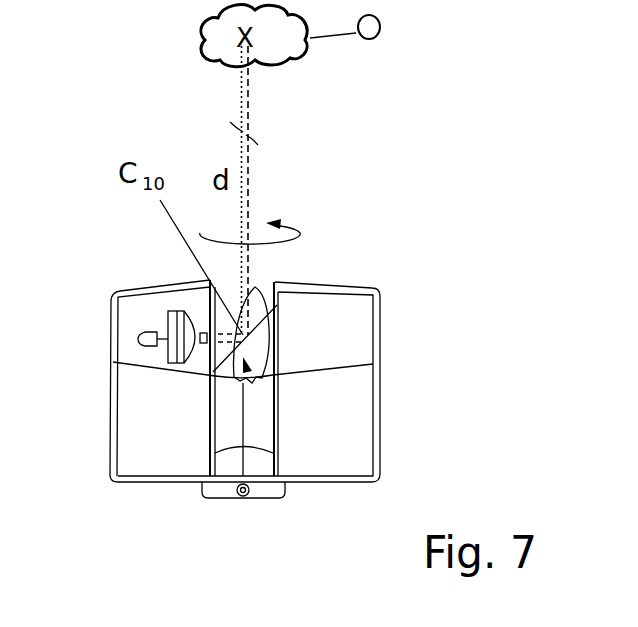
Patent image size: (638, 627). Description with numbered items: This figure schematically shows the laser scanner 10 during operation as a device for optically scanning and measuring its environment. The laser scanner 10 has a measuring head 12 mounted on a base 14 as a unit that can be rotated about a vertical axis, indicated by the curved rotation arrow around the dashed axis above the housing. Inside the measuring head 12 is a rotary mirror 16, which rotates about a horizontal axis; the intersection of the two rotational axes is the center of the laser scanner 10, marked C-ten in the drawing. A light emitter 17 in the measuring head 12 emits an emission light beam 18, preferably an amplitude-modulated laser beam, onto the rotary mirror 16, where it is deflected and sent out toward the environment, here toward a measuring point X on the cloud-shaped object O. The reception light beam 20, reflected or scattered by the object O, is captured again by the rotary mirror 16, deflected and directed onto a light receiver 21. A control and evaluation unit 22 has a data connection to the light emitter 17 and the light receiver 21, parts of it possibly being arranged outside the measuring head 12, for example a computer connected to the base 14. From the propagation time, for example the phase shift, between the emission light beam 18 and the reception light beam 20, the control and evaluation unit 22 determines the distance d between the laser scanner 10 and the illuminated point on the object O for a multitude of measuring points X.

The laser scanner 10 is at (301, 359).
The measuring head 12 is at (390, 381).
The base 14 is at (272, 492).
The rotary mirror 16 is at (240, 375).
The light emitter 17 is at (202, 345).
The emission light beam 18 is at (249, 178).
The reception light beam 20 is at (238, 101).
The light receiver 21 is at (167, 361).
The control and evaluation unit 22 is at (138, 336).